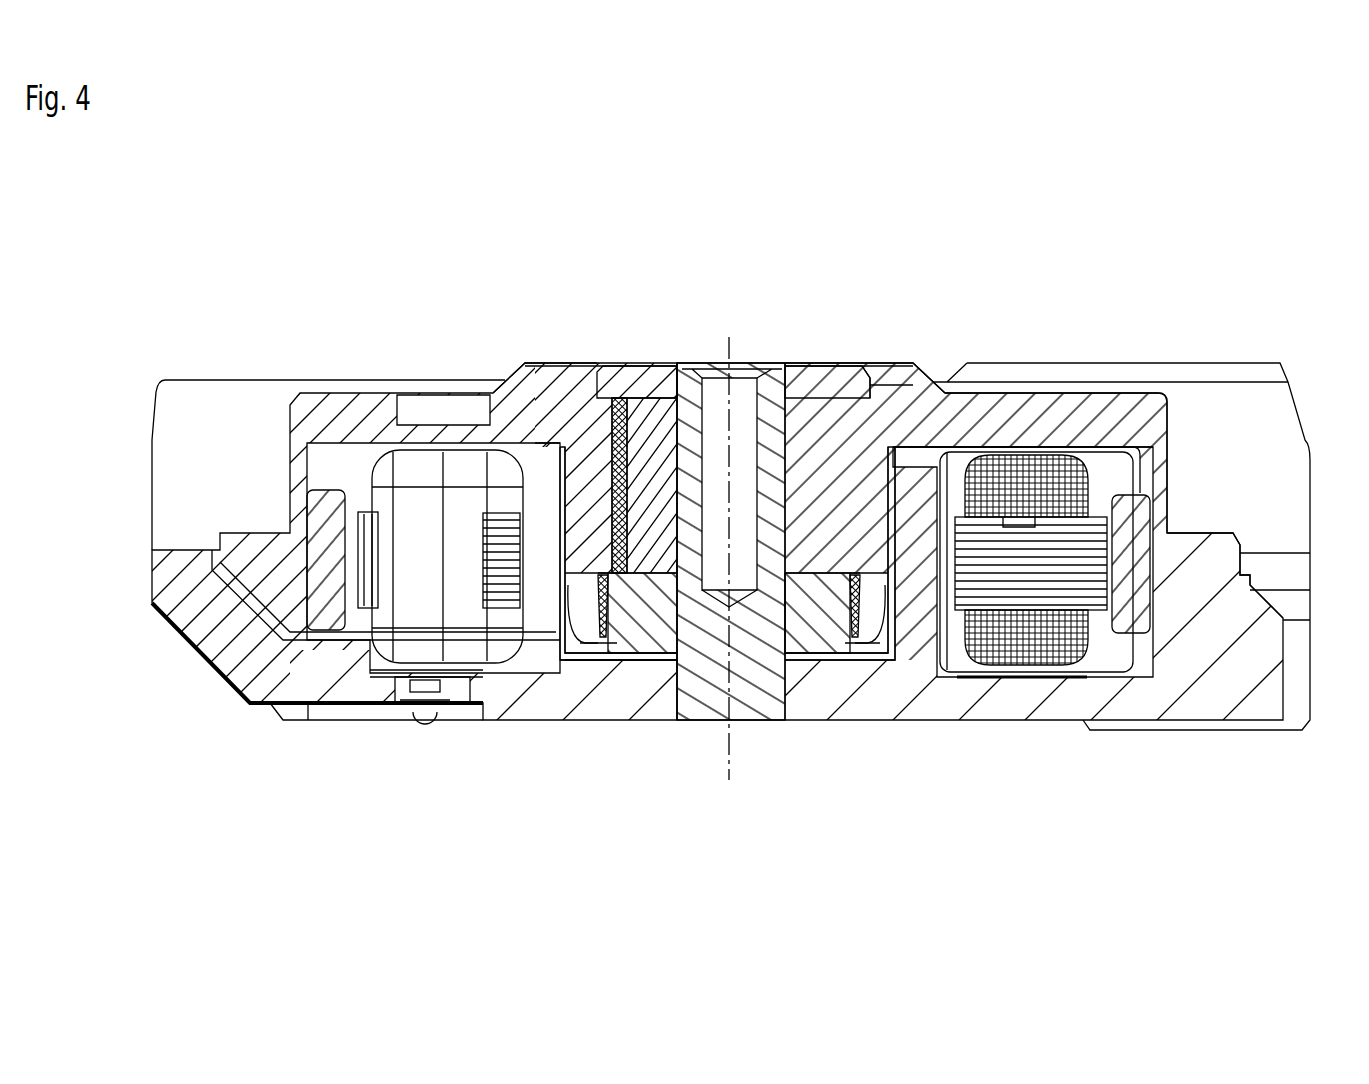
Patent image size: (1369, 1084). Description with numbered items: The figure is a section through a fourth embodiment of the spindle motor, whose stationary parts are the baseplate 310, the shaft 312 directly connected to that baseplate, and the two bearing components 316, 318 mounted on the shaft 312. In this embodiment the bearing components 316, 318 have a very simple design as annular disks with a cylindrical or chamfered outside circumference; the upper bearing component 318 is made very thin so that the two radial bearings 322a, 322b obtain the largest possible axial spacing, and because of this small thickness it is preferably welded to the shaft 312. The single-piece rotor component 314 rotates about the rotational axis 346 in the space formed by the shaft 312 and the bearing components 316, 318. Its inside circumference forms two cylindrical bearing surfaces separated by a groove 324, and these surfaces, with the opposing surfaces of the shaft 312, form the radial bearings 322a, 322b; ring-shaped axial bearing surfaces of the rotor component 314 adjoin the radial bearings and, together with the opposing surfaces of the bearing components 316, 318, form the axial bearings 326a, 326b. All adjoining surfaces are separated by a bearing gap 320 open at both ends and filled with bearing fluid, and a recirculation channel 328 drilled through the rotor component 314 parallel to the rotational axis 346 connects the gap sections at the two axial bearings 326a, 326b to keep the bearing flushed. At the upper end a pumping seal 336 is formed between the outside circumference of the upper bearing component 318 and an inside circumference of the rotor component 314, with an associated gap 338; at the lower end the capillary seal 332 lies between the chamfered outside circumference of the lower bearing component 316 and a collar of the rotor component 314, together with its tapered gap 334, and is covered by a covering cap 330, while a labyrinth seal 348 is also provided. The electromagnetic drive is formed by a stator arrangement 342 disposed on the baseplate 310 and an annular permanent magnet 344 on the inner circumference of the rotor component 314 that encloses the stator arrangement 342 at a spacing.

The baseplate 310 is at (1193, 697).
The shaft 312 is at (770, 700).
The rotor component 314 is at (1137, 407).
The bearing component 316 is at (817, 637).
The bearing component 318 is at (658, 380).
The bearing gap 320 is at (795, 380).
The radial bearing 322a is at (677, 452).
The radial bearing 322b is at (686, 700).
The groove 324 is at (613, 650).
The axial bearing 326a is at (645, 390).
The axial bearing 326b is at (660, 545).
The recirculation channel 328 is at (597, 475).
The covering cap 330 is at (525, 700).
The capillary seal 332 is at (925, 678).
The gap (tapered) 334 is at (852, 637).
The pumping seal 336 is at (885, 372).
The gap 338 is at (868, 372).
The stator arrangement 342 is at (1070, 655).
The magnet 344 is at (1212, 593).
The rotational axis 346 is at (730, 347).
The labyrinth seal 348 is at (590, 662).